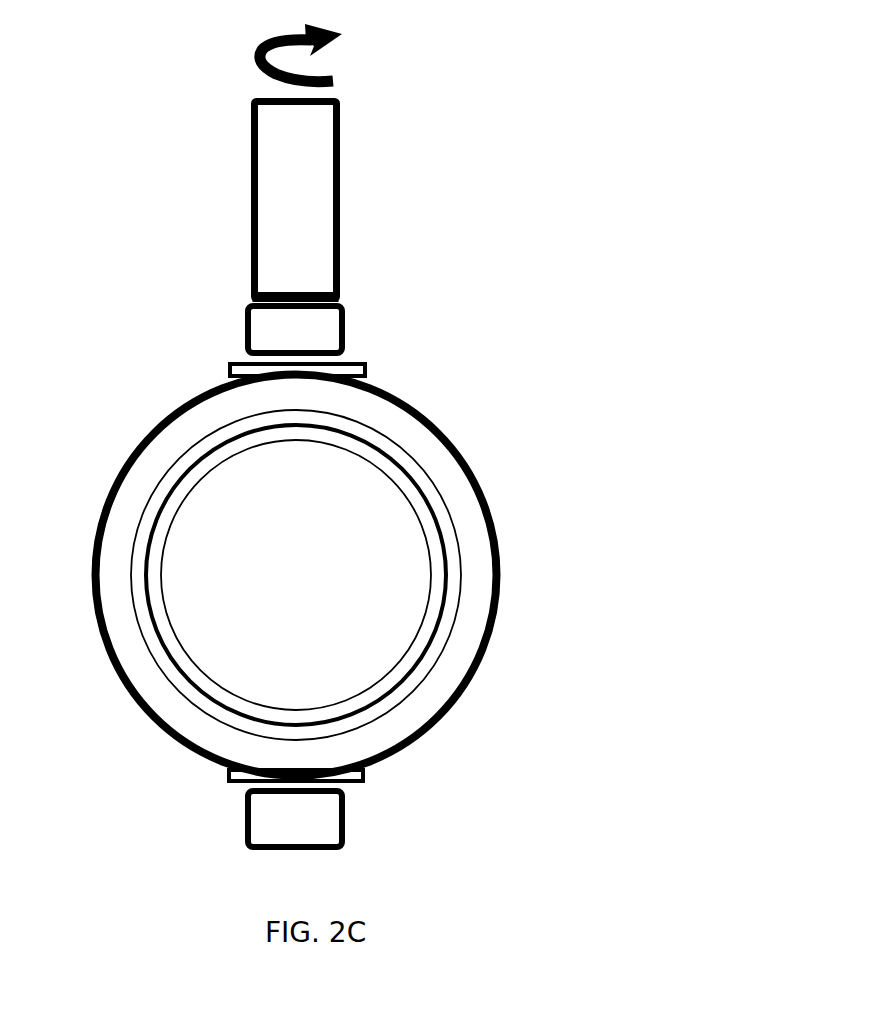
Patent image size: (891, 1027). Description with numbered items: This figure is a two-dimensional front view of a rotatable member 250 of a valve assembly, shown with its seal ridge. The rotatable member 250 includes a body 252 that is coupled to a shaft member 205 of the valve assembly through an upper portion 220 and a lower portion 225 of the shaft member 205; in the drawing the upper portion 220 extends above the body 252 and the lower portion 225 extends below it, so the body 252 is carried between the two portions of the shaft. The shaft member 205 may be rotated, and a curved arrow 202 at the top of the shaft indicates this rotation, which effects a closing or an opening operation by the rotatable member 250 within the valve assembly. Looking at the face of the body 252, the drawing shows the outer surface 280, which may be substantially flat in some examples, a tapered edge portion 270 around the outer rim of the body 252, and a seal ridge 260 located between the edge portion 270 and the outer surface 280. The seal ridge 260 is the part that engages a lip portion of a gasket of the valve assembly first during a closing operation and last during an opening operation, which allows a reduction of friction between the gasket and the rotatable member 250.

The rotation direction 202 is at (235, 57).
The shaft member 205 is at (365, 178).
The upper portion 220 is at (365, 323).
The lower portion 225 is at (210, 835).
The rotatable member 250 is at (725, 95).
The body 252 is at (545, 492).
The seal ridge 260 is at (437, 677).
The tampered edge portion 270 is at (110, 501).
The outer surface 280 is at (299, 679).